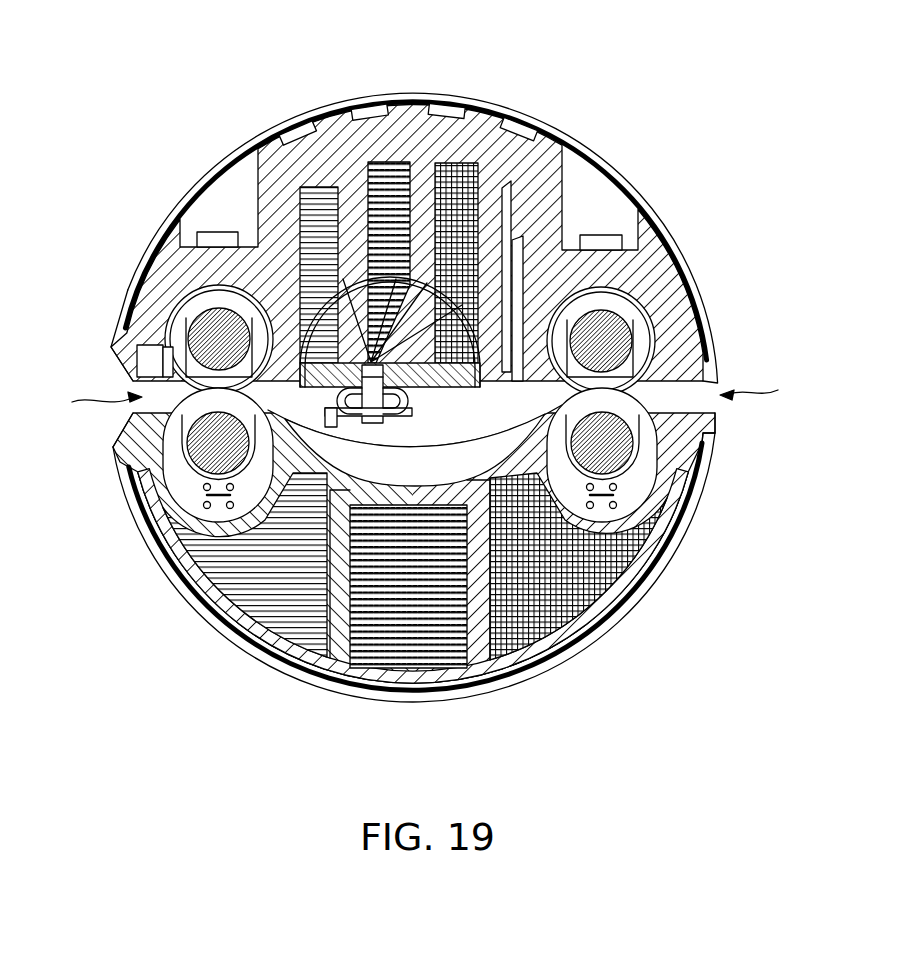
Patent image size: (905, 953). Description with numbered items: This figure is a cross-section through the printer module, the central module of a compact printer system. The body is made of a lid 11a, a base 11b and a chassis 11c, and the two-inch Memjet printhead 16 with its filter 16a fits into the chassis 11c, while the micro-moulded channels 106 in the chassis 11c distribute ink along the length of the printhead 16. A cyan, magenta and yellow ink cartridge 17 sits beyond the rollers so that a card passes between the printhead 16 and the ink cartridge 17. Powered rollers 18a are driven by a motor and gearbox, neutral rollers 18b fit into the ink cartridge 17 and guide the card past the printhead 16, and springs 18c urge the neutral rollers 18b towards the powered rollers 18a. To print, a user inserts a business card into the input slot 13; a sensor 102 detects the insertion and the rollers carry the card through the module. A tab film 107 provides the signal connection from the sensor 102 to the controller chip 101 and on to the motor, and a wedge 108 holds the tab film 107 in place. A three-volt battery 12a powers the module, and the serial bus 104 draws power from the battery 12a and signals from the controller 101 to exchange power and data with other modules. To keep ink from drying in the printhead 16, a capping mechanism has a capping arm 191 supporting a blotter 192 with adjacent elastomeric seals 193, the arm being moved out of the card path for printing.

The lid 11a is at (585, 645).
The base 11b is at (281, 124).
The chassis 11c is at (537, 160).
The 3V battery 12a is at (773, 394).
The input slot 13 is at (91, 405).
The Memjet printhead 16 is at (368, 424).
The filter 16a is at (371, 362).
The ink cartridge 17 is at (203, 598).
The powered rollers 18a is at (627, 338).
The neutral rollers 18b is at (627, 453).
The springs 18c is at (612, 505).
The controller chip 101 is at (507, 205).
The sensor 102 is at (150, 365).
The serial bus 104 is at (447, 108).
The micro-moulded channels 106 is at (382, 167).
The tab film 107 is at (183, 323).
The wedge 108 is at (520, 258).
The capping arm 191 is at (513, 480).
The blotter 192 is at (380, 424).
The elastomeric seals 193 is at (340, 425).